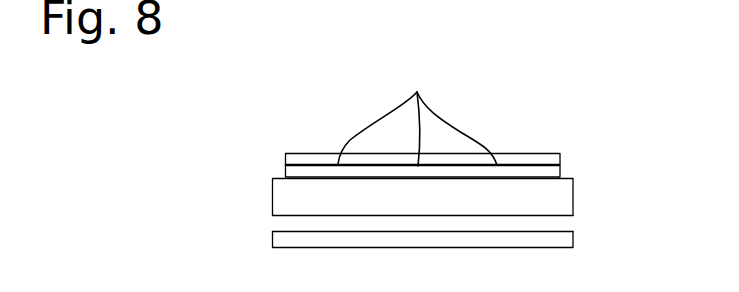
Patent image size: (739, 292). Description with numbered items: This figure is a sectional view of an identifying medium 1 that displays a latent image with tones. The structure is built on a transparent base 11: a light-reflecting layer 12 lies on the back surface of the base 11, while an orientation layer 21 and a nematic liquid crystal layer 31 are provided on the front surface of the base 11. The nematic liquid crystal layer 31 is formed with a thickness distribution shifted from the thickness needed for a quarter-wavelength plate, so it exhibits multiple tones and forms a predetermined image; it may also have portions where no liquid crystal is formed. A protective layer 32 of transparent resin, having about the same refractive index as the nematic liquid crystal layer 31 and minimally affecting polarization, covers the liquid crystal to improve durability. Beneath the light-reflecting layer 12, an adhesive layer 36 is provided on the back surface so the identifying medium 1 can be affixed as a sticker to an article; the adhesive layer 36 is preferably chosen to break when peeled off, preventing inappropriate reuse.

The identifying medium 1 is at (528, 134).
The transparent base 11 is at (557, 198).
The light-reflecting layer 12 is at (563, 222).
The orientation layer 21 is at (550, 171).
The nematic liquid crystal layer 31 is at (417, 115).
The protective layer 32 is at (305, 159).
The adhesive layer 36 is at (563, 238).